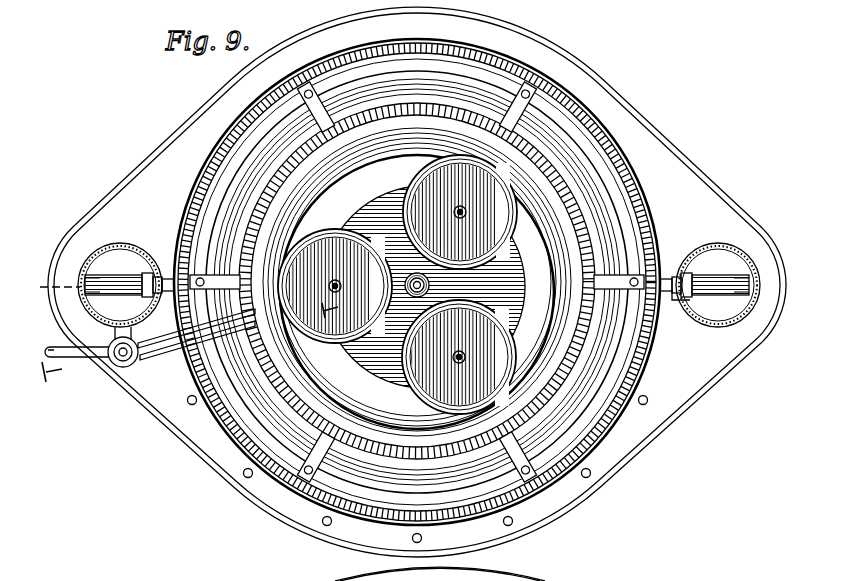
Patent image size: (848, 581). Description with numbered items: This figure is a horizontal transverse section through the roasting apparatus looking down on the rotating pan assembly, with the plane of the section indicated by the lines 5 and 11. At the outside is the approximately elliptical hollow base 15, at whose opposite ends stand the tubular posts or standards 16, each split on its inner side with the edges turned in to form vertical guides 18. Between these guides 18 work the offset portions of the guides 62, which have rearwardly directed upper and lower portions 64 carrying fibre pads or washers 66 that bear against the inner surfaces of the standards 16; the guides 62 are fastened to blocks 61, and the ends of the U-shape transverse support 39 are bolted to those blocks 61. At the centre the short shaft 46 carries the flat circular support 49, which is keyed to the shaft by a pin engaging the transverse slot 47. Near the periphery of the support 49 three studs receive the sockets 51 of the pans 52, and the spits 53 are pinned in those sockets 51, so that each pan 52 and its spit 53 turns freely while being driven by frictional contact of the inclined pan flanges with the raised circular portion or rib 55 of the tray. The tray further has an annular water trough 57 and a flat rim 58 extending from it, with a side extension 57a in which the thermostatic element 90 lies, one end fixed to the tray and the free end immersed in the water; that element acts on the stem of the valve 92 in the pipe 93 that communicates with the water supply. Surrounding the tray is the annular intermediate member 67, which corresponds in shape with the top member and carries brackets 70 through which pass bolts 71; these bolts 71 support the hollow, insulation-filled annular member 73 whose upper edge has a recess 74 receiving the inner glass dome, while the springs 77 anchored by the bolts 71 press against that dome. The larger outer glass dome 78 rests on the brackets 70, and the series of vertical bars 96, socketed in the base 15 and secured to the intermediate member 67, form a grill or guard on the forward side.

The section line 5- 5 is at (303, 286).
The section line 11- 11 is at (178, 343).
The hollow base 15 is at (644, 449).
The tubular posts or standards 16 is at (112, 248).
The vertical guides 18 is at (145, 296).
The U-shape transverse support 39 is at (675, 300).
The short shaft 46 is at (565, 286).
The transverse slot 47 is at (412, 296).
The flat circular support 49 is at (368, 373).
The sockets 51 is at (460, 218).
The pans 52 is at (405, 223).
The spits 53 is at (463, 211).
The raised circular portion or rib 55 is at (325, 198).
The annular water trough 57 is at (392, 125).
The extension 57a is at (158, 358).
The flat rim 58 is at (467, 72).
The blocks 61 is at (158, 276).
The guides 62 is at (146, 272).
The rearwardly directed upper and lower portions 64 is at (90, 272).
The fibre pads or washers 66 is at (88, 296).
The annular intermediate member 67 is at (192, 202).
The brackets 70 is at (541, 92).
The bolts 71 is at (302, 490).
The hollow annular member 73 is at (240, 192).
The recess 74 is at (310, 377).
The springs 77 is at (300, 100).
The outer glass dome 78 is at (217, 157).
The thermostatic element 90 is at (142, 350).
The valve 92 is at (112, 366).
The pipe 93 is at (78, 360).
The vertical bars 96 is at (189, 404).